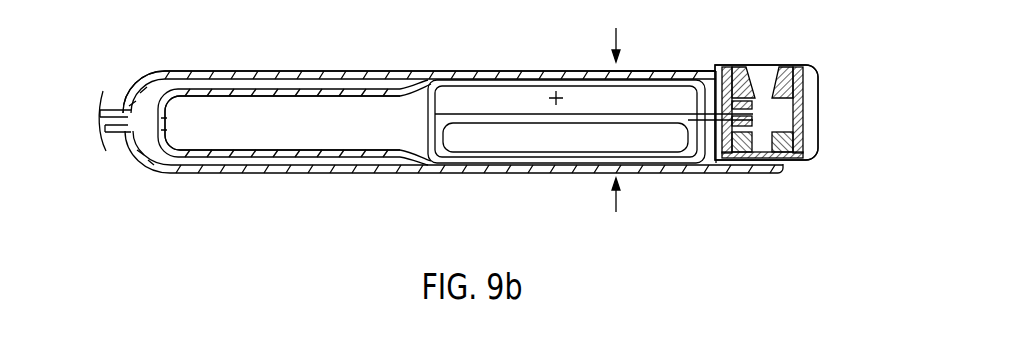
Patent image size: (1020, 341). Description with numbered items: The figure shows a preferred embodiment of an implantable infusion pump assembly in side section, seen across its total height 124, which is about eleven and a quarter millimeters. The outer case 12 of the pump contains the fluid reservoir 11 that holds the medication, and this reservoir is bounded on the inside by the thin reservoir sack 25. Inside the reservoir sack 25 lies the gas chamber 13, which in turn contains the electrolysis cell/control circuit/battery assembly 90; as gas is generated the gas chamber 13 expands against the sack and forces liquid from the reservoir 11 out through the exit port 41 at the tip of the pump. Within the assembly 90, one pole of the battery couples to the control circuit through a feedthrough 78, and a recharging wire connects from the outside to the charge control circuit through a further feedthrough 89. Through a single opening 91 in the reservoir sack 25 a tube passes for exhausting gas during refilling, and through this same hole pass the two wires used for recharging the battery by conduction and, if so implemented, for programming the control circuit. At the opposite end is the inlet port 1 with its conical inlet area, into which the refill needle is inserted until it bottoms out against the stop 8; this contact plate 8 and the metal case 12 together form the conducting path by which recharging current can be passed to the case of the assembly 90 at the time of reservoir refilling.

The inlet port 1 is at (766, 64).
The stop 8 is at (762, 168).
The reservoir 11 is at (158, 82).
The outer case 12 is at (198, 174).
The gas chamber 13 is at (247, 118).
The reservoir sack 25 is at (255, 158).
The exit port 41 is at (125, 134).
The feedthrough 78 is at (556, 97).
The feedthrough 89 is at (692, 70).
The electrolysis cell/control circuit/battery assembly 90 is at (426, 130).
The opening 91 is at (754, 116).
The total height 124 is at (618, 135).